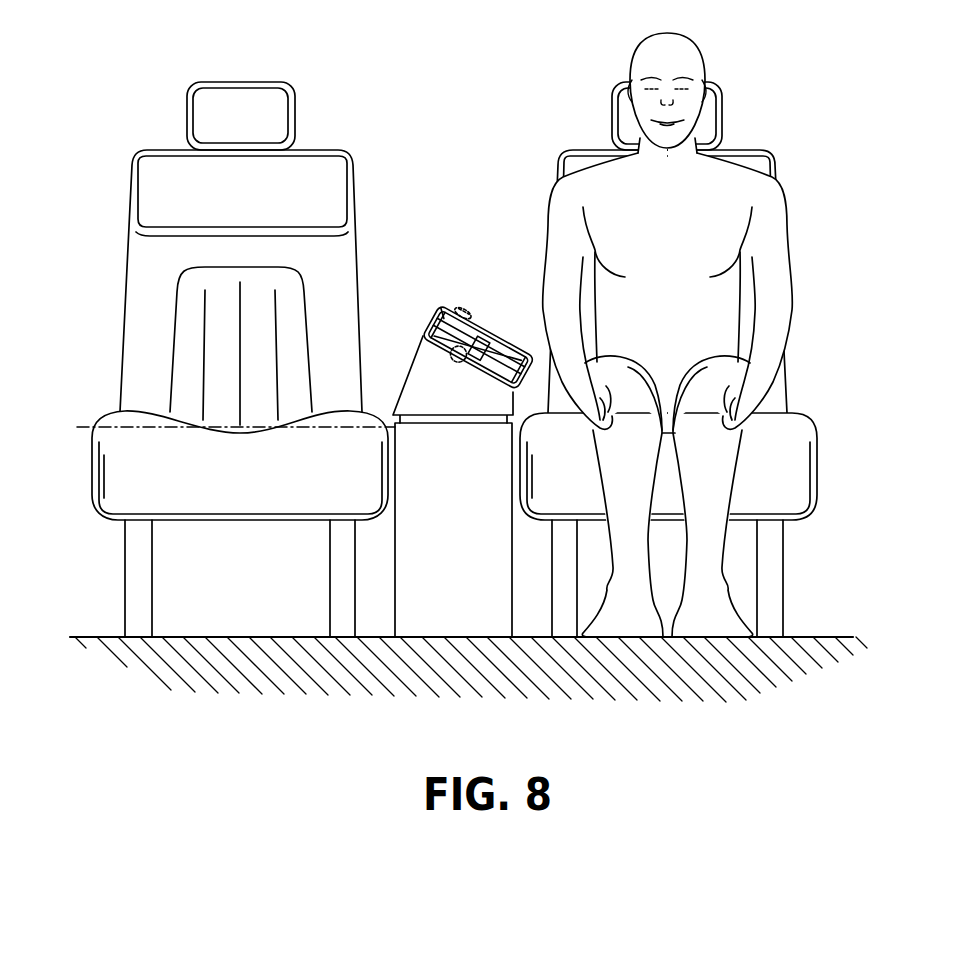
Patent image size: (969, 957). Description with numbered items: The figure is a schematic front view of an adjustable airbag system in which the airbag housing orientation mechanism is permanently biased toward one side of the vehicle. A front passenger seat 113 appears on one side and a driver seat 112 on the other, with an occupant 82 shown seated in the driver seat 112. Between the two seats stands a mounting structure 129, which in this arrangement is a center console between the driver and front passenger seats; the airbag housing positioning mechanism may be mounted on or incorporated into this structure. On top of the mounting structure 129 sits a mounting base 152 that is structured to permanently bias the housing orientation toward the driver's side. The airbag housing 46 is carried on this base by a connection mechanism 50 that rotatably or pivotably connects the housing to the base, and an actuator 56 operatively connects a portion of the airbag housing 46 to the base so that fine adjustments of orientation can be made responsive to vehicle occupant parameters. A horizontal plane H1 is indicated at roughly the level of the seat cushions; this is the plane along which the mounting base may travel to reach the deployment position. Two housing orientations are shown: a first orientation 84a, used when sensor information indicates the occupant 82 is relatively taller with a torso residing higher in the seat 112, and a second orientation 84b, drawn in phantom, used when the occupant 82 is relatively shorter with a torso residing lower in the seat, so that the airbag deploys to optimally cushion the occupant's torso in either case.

The front passenger seat 113 is at (162, 150).
The horizontal plane H1 is at (95, 425).
The mounting structure 129 is at (470, 528).
The mounting base 152 is at (400, 388).
The connection mechanism 50 is at (493, 333).
The airbag housing 46 is at (520, 348).
The actuator 56 is at (422, 340).
The first orientation 84a is at (433, 304).
The second orientation 84b is at (467, 305).
The driver seat 112 is at (743, 147).
The occupant 82 is at (707, 67).